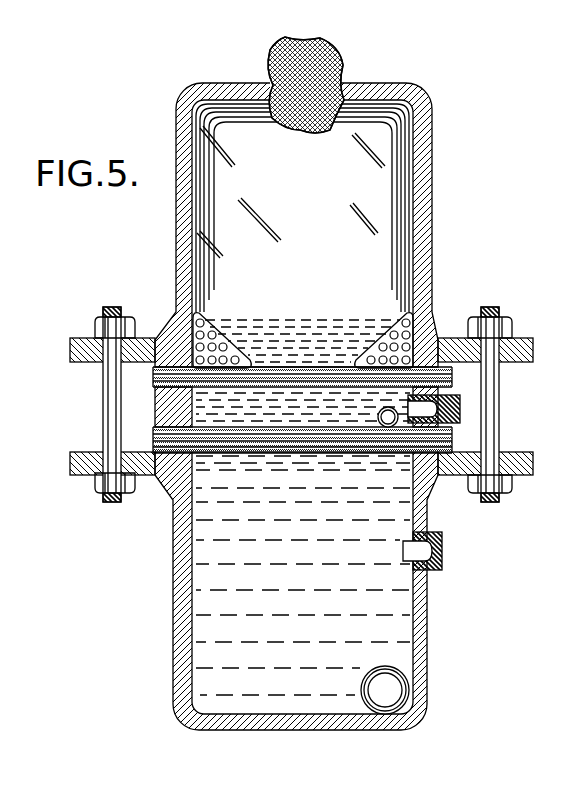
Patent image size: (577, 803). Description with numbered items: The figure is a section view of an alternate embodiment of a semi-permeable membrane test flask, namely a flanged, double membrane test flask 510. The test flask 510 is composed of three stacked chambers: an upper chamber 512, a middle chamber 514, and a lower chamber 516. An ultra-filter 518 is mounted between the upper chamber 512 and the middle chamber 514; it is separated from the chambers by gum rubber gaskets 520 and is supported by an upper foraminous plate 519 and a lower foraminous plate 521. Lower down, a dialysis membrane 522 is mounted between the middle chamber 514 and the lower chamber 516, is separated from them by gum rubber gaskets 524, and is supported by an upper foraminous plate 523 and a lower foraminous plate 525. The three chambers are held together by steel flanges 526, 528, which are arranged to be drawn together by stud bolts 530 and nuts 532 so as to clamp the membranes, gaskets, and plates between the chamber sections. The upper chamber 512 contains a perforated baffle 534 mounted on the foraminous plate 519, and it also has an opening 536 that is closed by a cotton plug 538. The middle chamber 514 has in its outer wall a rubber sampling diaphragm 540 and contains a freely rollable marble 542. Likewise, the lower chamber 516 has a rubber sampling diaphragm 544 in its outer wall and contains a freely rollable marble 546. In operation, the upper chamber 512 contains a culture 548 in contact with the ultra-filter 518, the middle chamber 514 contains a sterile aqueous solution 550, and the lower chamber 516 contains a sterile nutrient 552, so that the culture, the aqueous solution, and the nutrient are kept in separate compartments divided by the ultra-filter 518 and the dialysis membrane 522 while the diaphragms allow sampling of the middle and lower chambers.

The test flask 510 is at (319, 405).
The upper chamber 512 is at (427, 236).
The middle chamber 514 is at (155, 406).
The lower chamber 516 is at (181, 638).
The ultra-filter 518 is at (290, 375).
The upper foraminous plate 519 is at (343, 372).
The gum rubber gaskets 520 is at (261, 354).
The lower foraminous plate 521 is at (279, 388).
The dialysis membrane 522 is at (304, 446).
The upper foraminous plate 523 is at (235, 434).
The gum rubber gaskets 524 is at (261, 460).
The lower foraminous plate 525 is at (267, 450).
The steel flange 526 is at (70, 352).
The steel flange 528 is at (70, 467).
The stud bolts 530 is at (113, 310).
The nuts 532 is at (96, 325).
The perforated baffle 534 is at (220, 338).
The opening 536 is at (302, 81).
The cotton plug 538 is at (335, 76).
The rubber sampling diaphragm 540 is at (440, 409).
The freely rollable marble 542 is at (377, 417).
The rubber sampling diaphragm 544 is at (445, 548).
The freely rollable marble 546 is at (390, 690).
The culture 548 is at (300, 328).
The sterile aqueous solution 550 is at (313, 418).
The sterile nutrient 552 is at (205, 578).